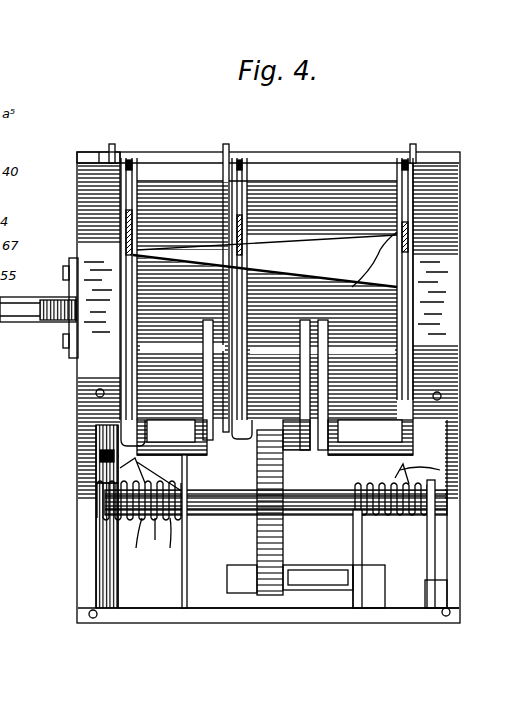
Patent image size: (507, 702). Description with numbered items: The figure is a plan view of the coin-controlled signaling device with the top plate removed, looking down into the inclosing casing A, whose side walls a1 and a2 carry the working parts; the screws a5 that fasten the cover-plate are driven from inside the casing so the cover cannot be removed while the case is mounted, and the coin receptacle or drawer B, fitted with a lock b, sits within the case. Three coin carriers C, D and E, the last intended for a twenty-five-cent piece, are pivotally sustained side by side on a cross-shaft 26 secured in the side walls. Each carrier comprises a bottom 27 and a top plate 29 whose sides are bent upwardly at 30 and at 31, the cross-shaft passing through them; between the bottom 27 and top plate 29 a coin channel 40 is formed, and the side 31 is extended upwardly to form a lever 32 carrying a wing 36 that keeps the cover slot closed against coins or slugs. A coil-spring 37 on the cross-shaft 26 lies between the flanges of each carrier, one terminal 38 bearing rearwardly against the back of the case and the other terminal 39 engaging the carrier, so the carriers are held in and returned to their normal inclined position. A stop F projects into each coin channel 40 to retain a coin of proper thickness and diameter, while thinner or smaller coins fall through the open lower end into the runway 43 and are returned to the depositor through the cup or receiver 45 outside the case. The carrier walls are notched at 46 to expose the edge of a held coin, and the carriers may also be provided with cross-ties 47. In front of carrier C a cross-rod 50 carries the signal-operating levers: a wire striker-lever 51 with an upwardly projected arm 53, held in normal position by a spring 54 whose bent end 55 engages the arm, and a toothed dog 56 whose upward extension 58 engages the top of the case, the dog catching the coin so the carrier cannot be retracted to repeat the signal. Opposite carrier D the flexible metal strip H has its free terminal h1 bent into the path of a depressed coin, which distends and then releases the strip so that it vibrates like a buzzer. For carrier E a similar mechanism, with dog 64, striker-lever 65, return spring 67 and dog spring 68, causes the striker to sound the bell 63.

The cross-shaft 26 is at (420, 332).
The carrier bottom 27 is at (238, 440).
The carrier top plate 29 is at (190, 445).
The top plate side 30 is at (318, 470).
The top plate side 31 is at (240, 490).
The lever 32 is at (126, 246).
The wing 36 is at (413, 205).
The coil-spring 37 is at (243, 300).
The rearward spring terminal 38 is at (115, 147).
The forward spring terminal 39 is at (127, 402).
The coin channel 40 is at (98, 157).
The runway 43 is at (306, 300).
The cup or receiver 45 is at (28, 322).
The notch 46 is at (458, 462).
The cross-tie 47 is at (385, 372).
The cross-rod 50 is at (336, 512).
The striker-lever 51 is at (138, 546).
The arm 53 is at (80, 462).
The spring 54 is at (100, 505).
The bent spring end 55 is at (130, 488).
The dog 56 is at (154, 537).
The dog extension 58 is at (166, 553).
The bell 63 is at (265, 259).
The dog 64 is at (385, 515).
The striker-lever 65 is at (412, 516).
The spring 67 is at (433, 495).
The spring 68 is at (369, 559).
The inclosing casing A is at (458, 388).
The coin drawer B is at (327, 190).
The carrier C is at (172, 444).
The carrier D is at (296, 444).
The carrier E is at (370, 446).
The stop-screw F is at (120, 386).
The flexible strip H is at (257, 576).
The lock b is at (330, 590).
The free terminal of flexible strip h1 is at (270, 512).
The side wall a1 is at (85, 556).
The side wall a2 is at (452, 546).
The cover screws a5 is at (88, 618).